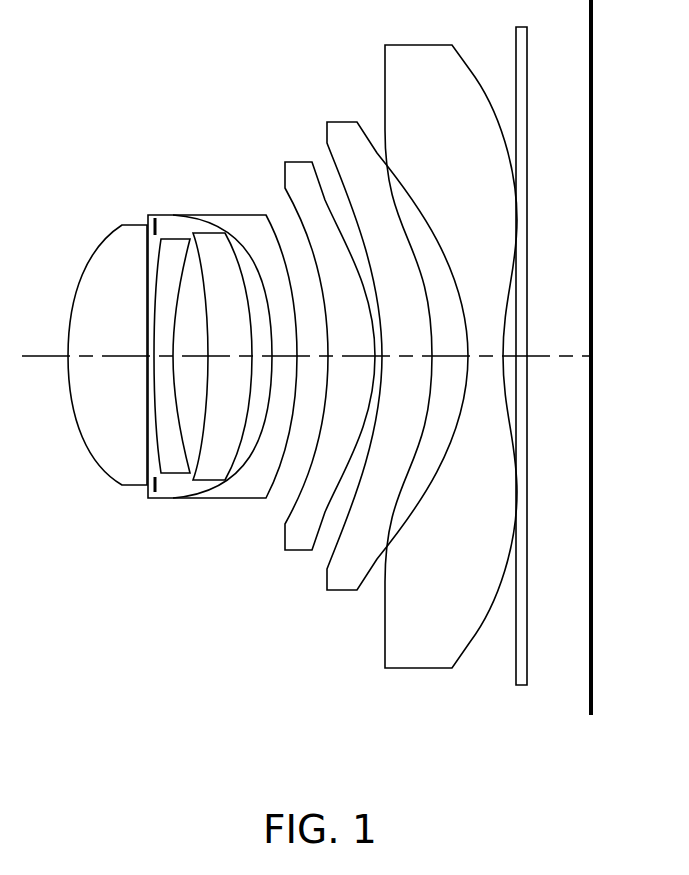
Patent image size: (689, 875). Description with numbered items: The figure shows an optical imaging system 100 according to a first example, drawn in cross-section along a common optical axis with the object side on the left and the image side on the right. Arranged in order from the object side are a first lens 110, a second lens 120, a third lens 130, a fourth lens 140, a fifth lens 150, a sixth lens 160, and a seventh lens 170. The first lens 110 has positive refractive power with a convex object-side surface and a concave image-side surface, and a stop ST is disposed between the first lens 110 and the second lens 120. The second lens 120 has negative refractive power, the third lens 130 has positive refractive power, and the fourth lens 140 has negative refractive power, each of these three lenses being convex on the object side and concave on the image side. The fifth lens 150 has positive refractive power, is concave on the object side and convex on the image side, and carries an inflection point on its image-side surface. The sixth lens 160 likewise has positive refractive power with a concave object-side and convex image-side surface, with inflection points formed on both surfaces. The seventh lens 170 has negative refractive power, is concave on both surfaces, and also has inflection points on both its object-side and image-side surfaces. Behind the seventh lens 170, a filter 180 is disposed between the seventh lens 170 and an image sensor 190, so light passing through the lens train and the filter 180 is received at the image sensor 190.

The optical imaging system 100 is at (177, 73).
The stop ST is at (157, 225).
The first lens 110 is at (130, 488).
The second lens 120 is at (177, 476).
The third lens 130 is at (213, 482).
The fourth lens 140 is at (258, 500).
The fifth lens 150 is at (298, 552).
The sixth lens 160 is at (337, 592).
The seventh lens 170 is at (420, 669).
The filter 180 is at (522, 686).
The image sensor 190 is at (590, 702).